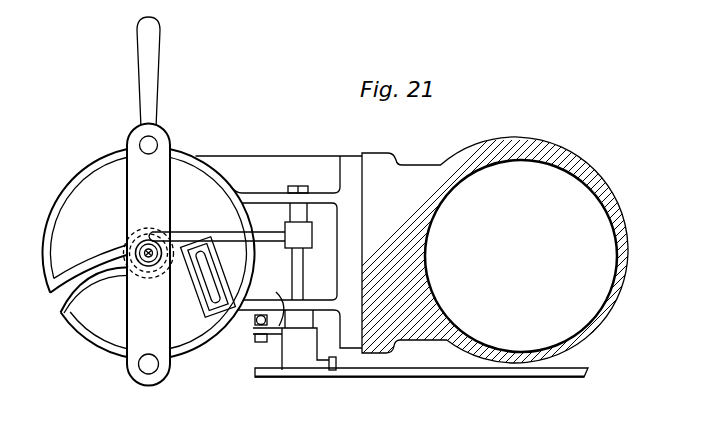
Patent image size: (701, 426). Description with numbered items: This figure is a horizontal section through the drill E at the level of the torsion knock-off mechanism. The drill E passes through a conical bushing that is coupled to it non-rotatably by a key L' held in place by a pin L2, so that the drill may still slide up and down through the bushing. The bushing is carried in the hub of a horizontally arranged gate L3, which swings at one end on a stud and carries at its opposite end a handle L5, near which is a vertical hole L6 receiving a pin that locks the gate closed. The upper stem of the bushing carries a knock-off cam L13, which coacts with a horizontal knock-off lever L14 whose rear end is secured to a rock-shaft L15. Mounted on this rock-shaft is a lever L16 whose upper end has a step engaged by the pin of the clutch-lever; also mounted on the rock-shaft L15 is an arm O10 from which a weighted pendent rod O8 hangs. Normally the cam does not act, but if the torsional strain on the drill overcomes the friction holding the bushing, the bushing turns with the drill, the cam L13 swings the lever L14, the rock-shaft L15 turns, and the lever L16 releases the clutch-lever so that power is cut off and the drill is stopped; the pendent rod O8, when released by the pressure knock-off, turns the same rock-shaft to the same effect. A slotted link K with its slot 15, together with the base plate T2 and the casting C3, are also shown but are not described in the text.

The drill E is at (140, 266).
The slotted link K is at (208, 280).
The slot 15 is at (214, 290).
The handle L5 is at (147, 73).
The gate L3 is at (148, 255).
The vertical hole L6 is at (160, 139).
The pin L2 is at (148, 366).
The key L' is at (149, 270).
The knock-off cam L13 is at (133, 254).
The horizontal knock-off lever L14 is at (190, 232).
The rock-shaft L15 is at (300, 254).
The pendent rod O8 is at (255, 328).
The arm O10 is at (272, 301).
The lever L16 is at (329, 366).
The base plate T2 is at (463, 371).
The cylinder casting C3 is at (464, 268).